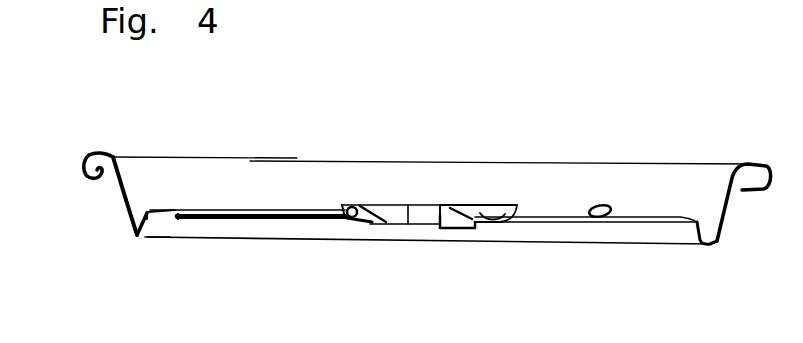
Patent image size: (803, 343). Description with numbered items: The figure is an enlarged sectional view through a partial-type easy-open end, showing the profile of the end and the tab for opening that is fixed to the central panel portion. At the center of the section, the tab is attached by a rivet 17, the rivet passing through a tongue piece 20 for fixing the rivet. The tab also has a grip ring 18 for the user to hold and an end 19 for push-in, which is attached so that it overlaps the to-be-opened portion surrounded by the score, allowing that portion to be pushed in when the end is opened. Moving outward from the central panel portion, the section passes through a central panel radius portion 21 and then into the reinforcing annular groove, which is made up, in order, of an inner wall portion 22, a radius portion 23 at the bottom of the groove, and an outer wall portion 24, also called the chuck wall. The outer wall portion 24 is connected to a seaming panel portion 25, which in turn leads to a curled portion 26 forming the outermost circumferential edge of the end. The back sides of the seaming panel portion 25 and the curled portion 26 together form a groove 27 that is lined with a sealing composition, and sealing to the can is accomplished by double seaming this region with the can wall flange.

The rivet 17 is at (437, 206).
The grip ring 18 is at (600, 206).
The end for push-in 19 is at (354, 204).
The tongue piece for fixing the rivet 20 is at (450, 227).
The central panel radius portion 21 is at (150, 211).
The inner wall portion 22 is at (150, 228).
The radius portion 23 is at (136, 237).
The outer wall portion (chuck wall) 24 is at (133, 232).
The seaming panel portion 25 is at (97, 157).
The curled portion 26 is at (84, 167).
The groove 27 is at (100, 181).